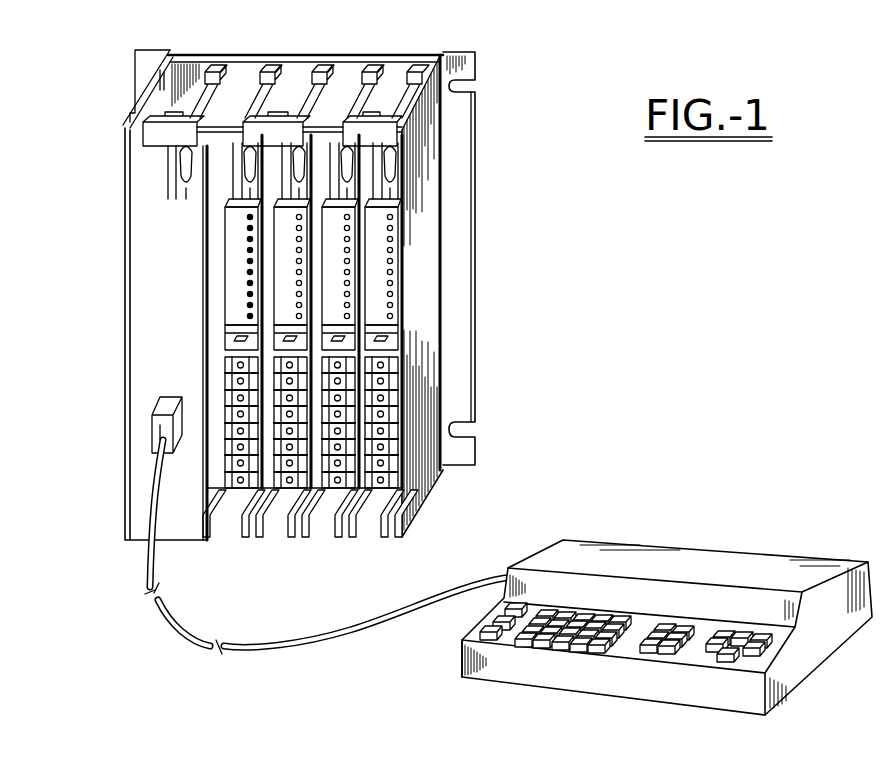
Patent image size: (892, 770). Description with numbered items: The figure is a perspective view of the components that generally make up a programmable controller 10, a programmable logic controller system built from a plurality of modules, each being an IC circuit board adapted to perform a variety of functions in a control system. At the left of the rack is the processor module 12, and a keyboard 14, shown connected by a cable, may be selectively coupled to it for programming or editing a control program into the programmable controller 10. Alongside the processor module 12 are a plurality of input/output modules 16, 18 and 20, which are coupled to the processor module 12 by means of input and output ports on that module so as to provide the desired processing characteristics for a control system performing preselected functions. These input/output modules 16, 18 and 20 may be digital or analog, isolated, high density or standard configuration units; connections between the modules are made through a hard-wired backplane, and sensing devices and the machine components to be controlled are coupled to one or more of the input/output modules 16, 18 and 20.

The programmable controller 10 is at (482, 232).
The processor module 12 is at (148, 230).
The keyboard 14 is at (711, 552).
The input/output module 16 is at (267, 50).
The input/output module 18 is at (330, 50).
The input/output module 20 is at (402, 50).